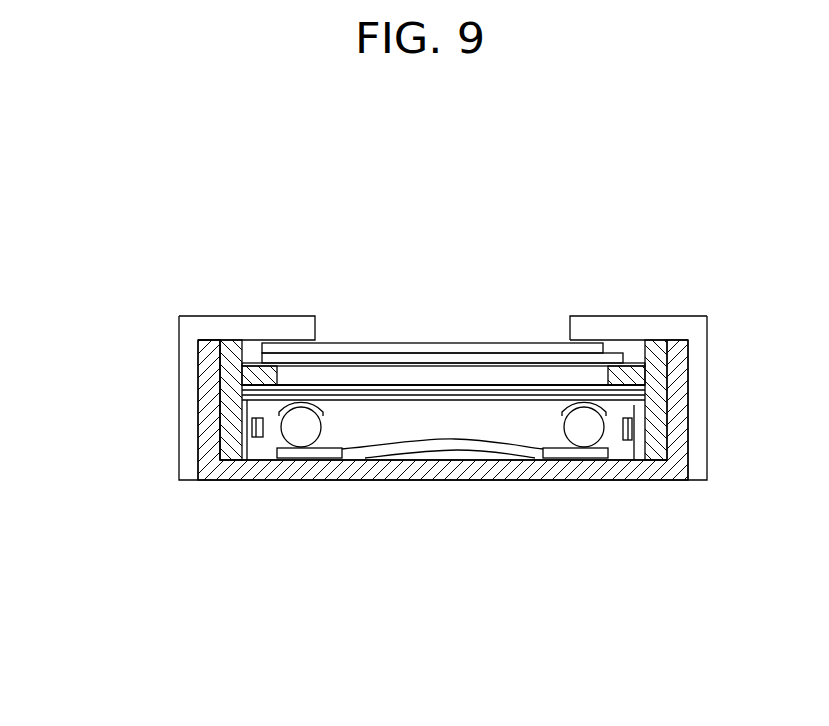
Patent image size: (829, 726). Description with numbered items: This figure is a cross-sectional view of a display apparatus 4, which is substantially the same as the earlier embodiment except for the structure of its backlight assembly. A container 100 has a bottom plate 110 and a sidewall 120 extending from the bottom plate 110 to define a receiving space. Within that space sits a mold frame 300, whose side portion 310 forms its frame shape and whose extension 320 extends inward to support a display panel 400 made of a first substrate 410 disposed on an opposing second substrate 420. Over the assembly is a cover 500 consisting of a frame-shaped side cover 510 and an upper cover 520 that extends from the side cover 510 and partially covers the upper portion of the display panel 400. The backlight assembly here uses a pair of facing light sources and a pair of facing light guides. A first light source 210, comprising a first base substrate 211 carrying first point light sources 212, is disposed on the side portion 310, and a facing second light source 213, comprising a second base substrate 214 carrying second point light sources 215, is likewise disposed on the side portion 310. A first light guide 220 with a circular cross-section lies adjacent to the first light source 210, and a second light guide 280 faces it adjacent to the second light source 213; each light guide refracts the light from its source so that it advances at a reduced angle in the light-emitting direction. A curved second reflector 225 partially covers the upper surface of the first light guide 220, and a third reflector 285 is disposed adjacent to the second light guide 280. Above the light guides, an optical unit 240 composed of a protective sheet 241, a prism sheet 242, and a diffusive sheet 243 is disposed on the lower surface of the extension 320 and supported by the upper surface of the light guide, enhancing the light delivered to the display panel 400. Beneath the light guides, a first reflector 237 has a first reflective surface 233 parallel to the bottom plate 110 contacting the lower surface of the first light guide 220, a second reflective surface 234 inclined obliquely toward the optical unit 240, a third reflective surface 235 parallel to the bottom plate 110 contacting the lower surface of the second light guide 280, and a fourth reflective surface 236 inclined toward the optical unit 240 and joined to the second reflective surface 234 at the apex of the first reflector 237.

The display apparatus 4 is at (408, 193).
The container 100 is at (100, 427).
The bottom plate 110 is at (230, 492).
The sidewall 120 is at (208, 437).
The first light source 210 is at (267, 572).
The first base substrate 211 is at (236, 468).
The first point light sources 212 is at (254, 454).
The second light source 213 is at (682, 548).
The second base substrate 214 is at (642, 455).
The second point light sources 215 is at (622, 460).
The first light guide 220 is at (320, 436).
The second reflector 225 is at (301, 402).
The first reflective surface 233 is at (295, 458).
The second reflective surface 234 is at (400, 449).
The third reflective surface 235 is at (575, 458).
The fourth reflective surface 236 is at (472, 450).
The first reflector 237 is at (270, 632).
The optical unit 240 is at (352, 266).
The protective sheet 241 is at (368, 388).
The prism sheet 242 is at (413, 395).
The diffusive sheet 243 is at (458, 400).
The second light guide 280 is at (565, 437).
The third reflector 285 is at (582, 403).
The mold frame 300 is at (100, 362).
The side portion 310 is at (243, 400).
The extension 320 is at (243, 373).
The display panel 400 is at (488, 266).
The first substrate 410 is at (553, 363).
The second substrate 420 is at (507, 350).
The cover 500 is at (100, 295).
The side cover 510 is at (185, 340).
The upper cover 520 is at (196, 314).